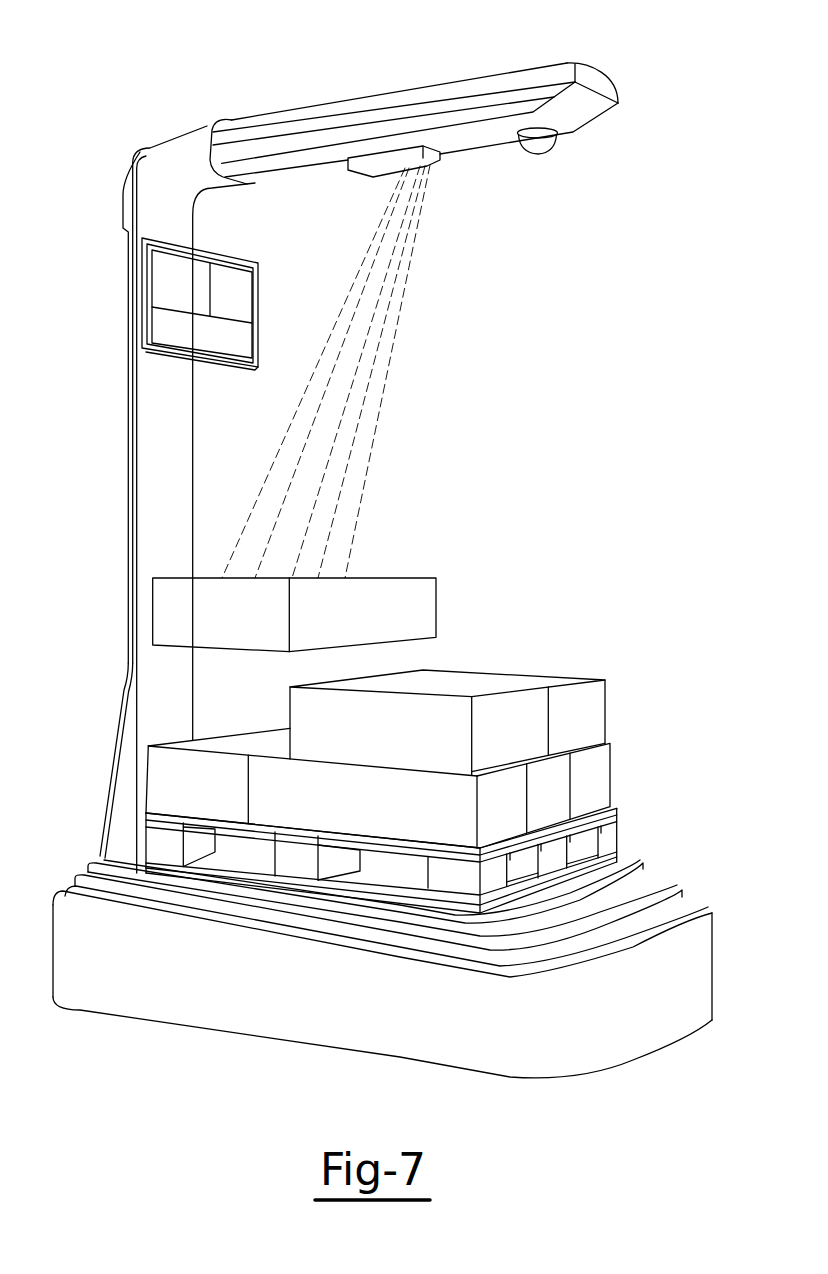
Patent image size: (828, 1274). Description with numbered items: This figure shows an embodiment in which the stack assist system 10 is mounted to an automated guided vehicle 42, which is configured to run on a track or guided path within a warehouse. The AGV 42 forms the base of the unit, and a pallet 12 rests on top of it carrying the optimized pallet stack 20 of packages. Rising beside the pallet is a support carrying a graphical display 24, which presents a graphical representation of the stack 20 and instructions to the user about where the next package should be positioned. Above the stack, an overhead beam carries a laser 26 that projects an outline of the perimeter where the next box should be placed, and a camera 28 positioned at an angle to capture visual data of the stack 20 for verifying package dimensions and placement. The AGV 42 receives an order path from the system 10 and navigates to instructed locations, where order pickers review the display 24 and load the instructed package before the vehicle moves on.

The stack assist system 10 is at (236, 110).
The pallet 12 is at (610, 842).
The optimized pallet stack 20 is at (408, 600).
The graphical display 24 is at (167, 288).
The laser 26 is at (427, 164).
The camera 28 is at (538, 148).
The automated guided vehicle 42 is at (583, 1010).